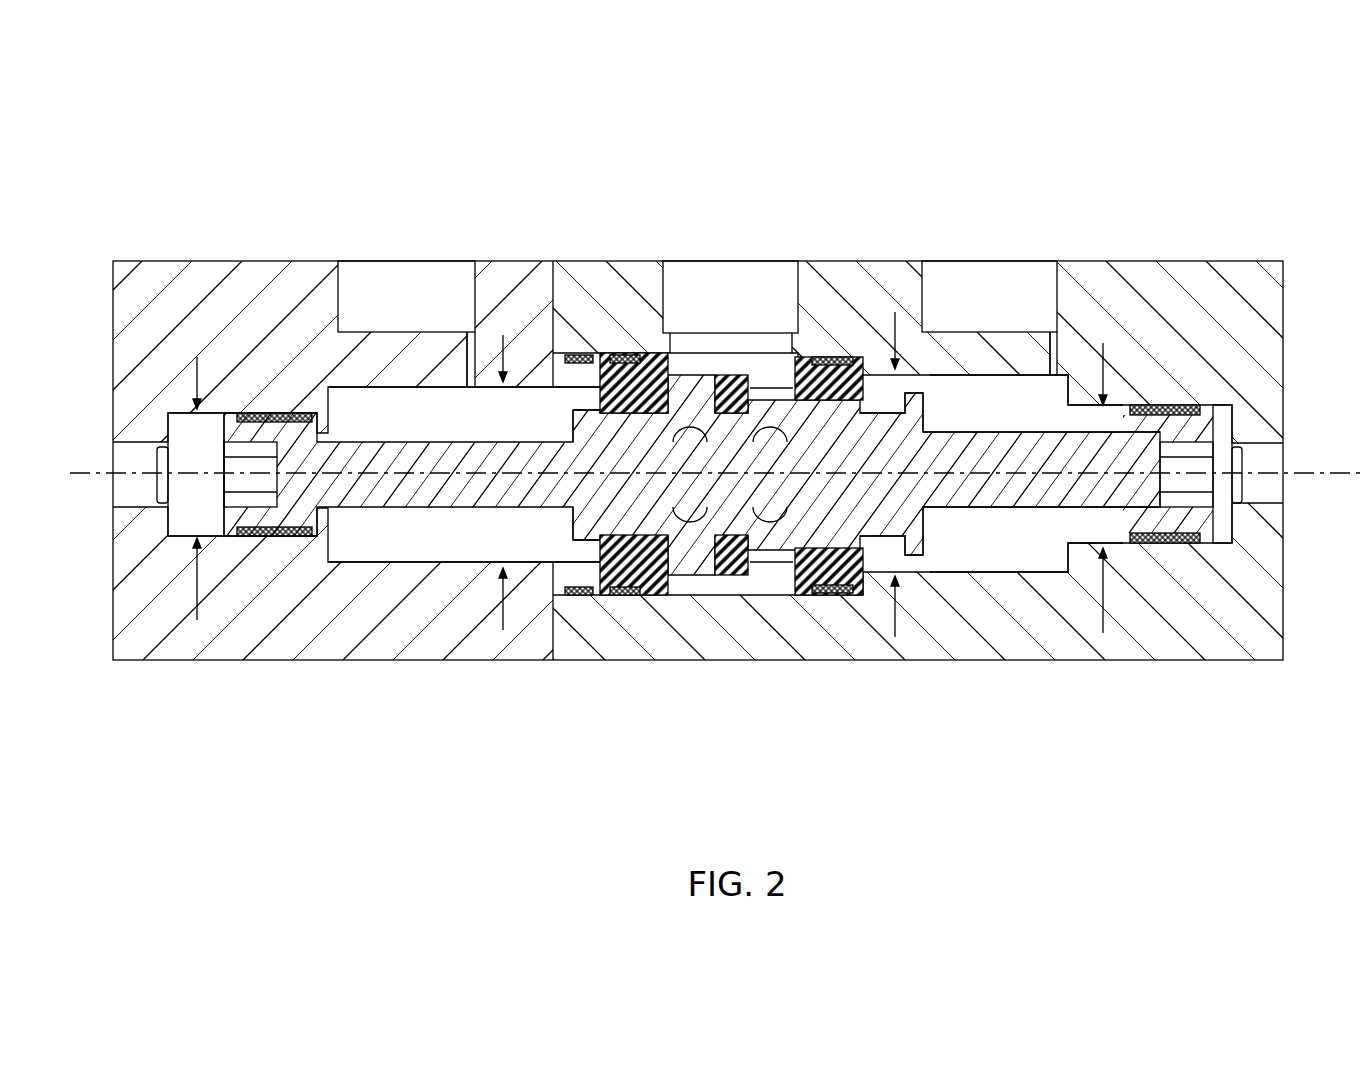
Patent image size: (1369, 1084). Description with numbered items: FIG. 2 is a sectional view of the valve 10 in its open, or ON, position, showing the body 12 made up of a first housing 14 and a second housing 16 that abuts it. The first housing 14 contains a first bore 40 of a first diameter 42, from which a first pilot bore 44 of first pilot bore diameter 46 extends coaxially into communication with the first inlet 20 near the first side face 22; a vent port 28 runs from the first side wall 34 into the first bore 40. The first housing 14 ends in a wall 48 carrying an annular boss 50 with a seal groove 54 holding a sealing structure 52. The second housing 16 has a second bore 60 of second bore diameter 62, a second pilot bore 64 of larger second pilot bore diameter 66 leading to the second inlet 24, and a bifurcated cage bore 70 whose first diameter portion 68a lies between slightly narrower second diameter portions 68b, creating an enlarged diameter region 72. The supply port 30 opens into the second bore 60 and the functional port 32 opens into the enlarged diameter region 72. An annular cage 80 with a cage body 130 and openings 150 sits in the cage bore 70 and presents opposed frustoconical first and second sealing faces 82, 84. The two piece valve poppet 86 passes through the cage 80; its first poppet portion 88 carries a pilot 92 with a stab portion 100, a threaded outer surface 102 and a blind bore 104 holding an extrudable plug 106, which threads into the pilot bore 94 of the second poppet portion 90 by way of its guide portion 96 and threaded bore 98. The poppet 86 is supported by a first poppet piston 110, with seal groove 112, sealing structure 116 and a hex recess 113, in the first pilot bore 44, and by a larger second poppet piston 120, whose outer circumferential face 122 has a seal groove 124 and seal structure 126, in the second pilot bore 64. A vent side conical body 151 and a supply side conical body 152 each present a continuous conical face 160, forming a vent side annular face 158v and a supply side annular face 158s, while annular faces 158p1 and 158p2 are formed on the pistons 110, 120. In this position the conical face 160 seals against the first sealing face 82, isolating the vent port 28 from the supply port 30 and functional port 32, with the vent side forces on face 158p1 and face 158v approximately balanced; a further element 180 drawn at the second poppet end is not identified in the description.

The valve 10 is at (1292, 300).
The valve body 12 is at (1195, 135).
The first housing 14 is at (214, 410).
The second housing 16 is at (1283, 606).
The first inlet 20 is at (133, 487).
The first side face 22 is at (113, 343).
The second inlet 24 is at (1250, 445).
The vent port 28 is at (378, 288).
The supply port 30 is at (933, 292).
The functional port 32 is at (676, 292).
The first side wall 34 is at (228, 330).
The first bore 40 is at (445, 540).
The first diameter 42 is at (502, 330).
The first pilot bore 44 is at (187, 427).
The first pilot bore diameter 46 is at (190, 600).
The wall 48 is at (575, 592).
The annular boss 50 is at (588, 598).
The sealing structure 52 is at (578, 356).
The seal groove 54 is at (570, 550).
The second bore 60 is at (982, 551).
The second bore diameter 62 is at (855, 440).
The second pilot bore 64 is at (1250, 414).
The second pilot bore diameter 66 is at (1100, 630).
The first diameter portion 68a is at (640, 596).
The second diameter portions 68b is at (625, 352).
The bifurcated cage bore 70 is at (597, 398).
The enlarged diameter region 72 is at (735, 577).
The annular cage 80 is at (805, 356).
The first annular sealing face 82 is at (560, 392).
The second annular sealing face 84 is at (880, 556).
The valve poppet 86 is at (987, 465).
The first poppet portion 88 is at (357, 493).
The second poppet portion 90 is at (1140, 430).
The pilot 92 is at (915, 415).
The pilot bore 94 is at (925, 556).
The guide portion 96 is at (940, 470).
The threaded bore 98 is at (790, 568).
The stab portion 100 is at (925, 380).
The threaded outer surface 102 is at (850, 597).
The blind bore 104 is at (690, 375).
The plug 106 is at (716, 377).
The first poppet piston 110 is at (280, 425).
The seal groove 112 is at (190, 430).
The hex recess 113 is at (240, 467).
The sealing structure 116 is at (245, 455).
The second poppet piston 120 is at (1205, 527).
The outer circumferential face 122 is at (1222, 420).
The seal groove 124 is at (1143, 544).
The seal structure 126 is at (1190, 404).
The cage body 130 is at (633, 354).
The openings 150 is at (700, 560).
The vent side conical body 151 is at (470, 540).
The supply side conical body 152 is at (895, 312).
The first poppet piston annular face 158p1 is at (465, 382).
The second poppet piston annular face 158p2 is at (1055, 372).
The supply side annular face 158s is at (989, 318).
The vent side annular face 158v is at (573, 424).
The continuous conical face 160 is at (830, 357).
The second nut 180 is at (1200, 477).